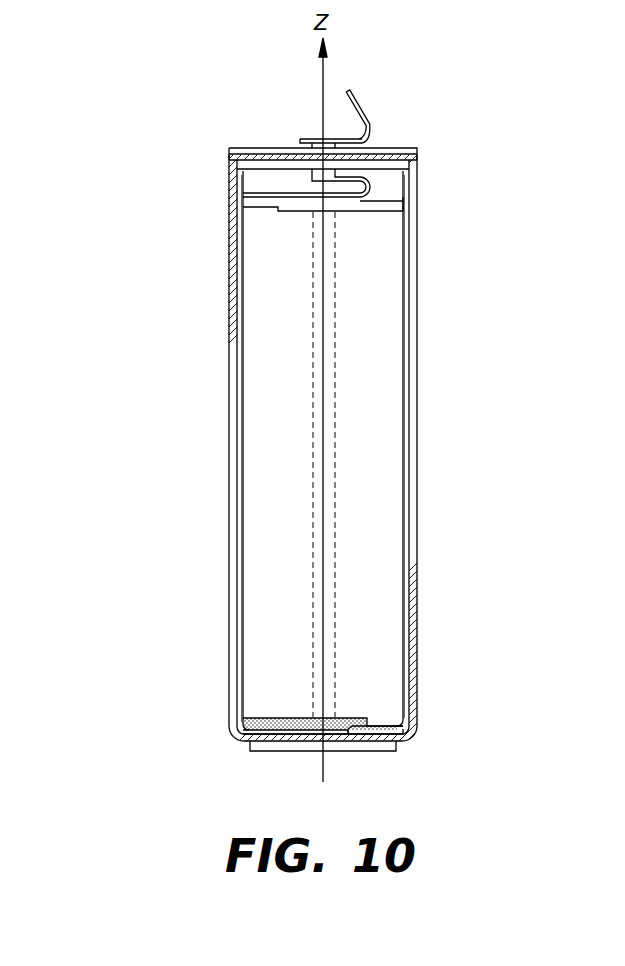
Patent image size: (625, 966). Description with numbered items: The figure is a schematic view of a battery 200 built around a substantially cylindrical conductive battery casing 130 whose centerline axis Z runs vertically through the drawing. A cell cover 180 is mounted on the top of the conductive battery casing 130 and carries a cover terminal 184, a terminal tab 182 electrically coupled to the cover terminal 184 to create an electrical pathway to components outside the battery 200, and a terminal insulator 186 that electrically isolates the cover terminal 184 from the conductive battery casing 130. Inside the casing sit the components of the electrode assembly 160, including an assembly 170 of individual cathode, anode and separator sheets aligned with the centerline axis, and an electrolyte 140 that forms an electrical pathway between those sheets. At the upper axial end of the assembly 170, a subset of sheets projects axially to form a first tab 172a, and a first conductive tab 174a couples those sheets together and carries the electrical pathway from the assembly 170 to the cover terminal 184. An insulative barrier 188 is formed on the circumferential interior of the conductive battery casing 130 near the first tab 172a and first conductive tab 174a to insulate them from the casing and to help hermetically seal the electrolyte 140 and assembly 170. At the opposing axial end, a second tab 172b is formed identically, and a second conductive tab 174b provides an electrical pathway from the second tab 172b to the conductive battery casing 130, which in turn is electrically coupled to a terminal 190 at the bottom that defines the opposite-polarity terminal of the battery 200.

The conductive battery casing 130 is at (412, 580).
The electrolyte 140 is at (282, 722).
The electrode assembly 160 is at (416, 386).
The assembly 170 is at (392, 470).
The first tab 172a is at (262, 206).
The second tab 172b is at (388, 722).
The first conductive tab 174a is at (370, 190).
The second conductive tab 174b is at (345, 730).
The cell cover 180 is at (417, 155).
The terminal tab 182 is at (361, 107).
The cover terminal 184 is at (305, 141).
The terminal insulator 186 is at (390, 148).
The insulative barrier 188 is at (411, 249).
The terminal 190 is at (380, 751).
The battery 200 is at (118, 389).